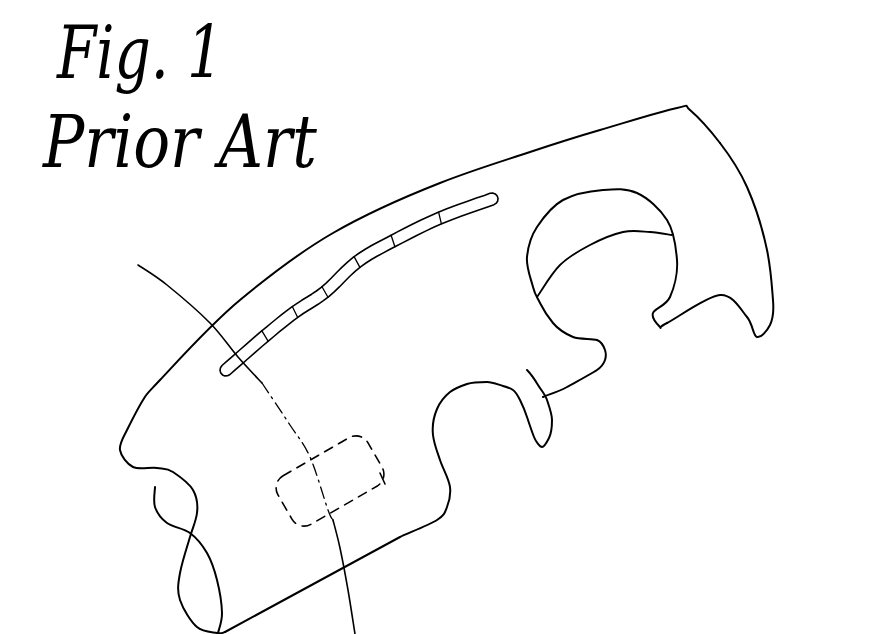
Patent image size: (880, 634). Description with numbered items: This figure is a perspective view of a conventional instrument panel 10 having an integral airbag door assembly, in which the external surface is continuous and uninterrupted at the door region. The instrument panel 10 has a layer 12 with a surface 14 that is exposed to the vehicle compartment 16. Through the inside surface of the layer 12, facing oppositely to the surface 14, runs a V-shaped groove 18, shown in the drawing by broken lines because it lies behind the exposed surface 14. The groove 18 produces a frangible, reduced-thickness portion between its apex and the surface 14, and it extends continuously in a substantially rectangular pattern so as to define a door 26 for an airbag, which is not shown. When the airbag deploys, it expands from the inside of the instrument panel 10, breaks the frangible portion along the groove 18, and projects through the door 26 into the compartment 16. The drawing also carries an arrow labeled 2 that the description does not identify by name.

The prior art device 2 is at (157, 290).
The instrument panel 10 is at (468, 172).
The layer 12 is at (612, 175).
The surface 14 is at (738, 210).
The vehicle compartment 16 is at (662, 465).
The V-shaped groove 18 is at (367, 492).
The door 26 is at (358, 470).